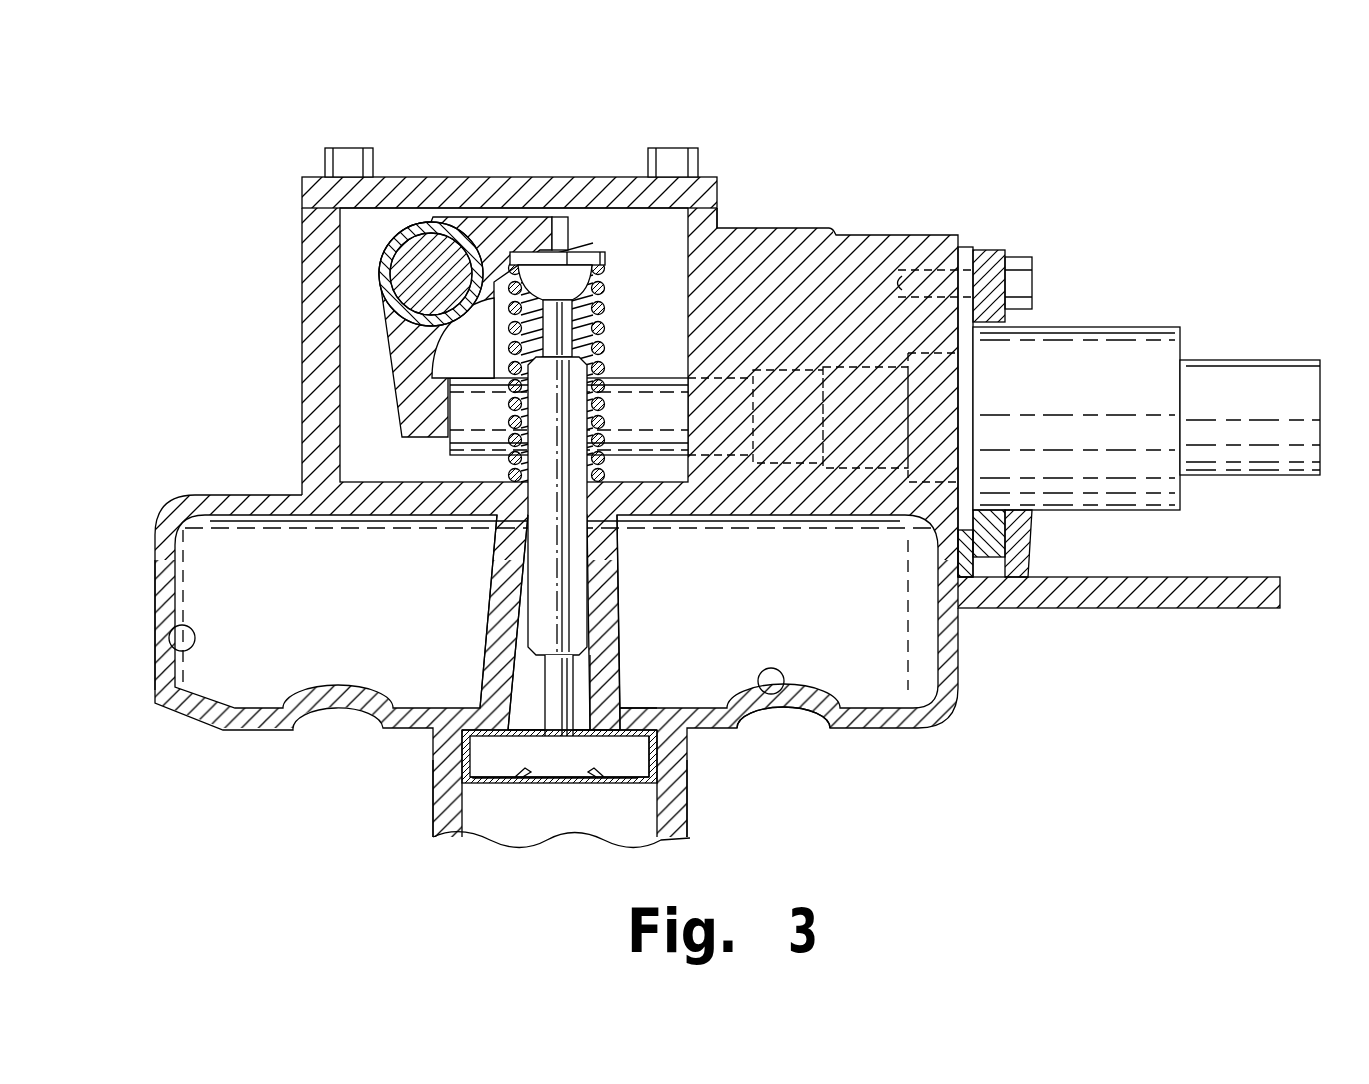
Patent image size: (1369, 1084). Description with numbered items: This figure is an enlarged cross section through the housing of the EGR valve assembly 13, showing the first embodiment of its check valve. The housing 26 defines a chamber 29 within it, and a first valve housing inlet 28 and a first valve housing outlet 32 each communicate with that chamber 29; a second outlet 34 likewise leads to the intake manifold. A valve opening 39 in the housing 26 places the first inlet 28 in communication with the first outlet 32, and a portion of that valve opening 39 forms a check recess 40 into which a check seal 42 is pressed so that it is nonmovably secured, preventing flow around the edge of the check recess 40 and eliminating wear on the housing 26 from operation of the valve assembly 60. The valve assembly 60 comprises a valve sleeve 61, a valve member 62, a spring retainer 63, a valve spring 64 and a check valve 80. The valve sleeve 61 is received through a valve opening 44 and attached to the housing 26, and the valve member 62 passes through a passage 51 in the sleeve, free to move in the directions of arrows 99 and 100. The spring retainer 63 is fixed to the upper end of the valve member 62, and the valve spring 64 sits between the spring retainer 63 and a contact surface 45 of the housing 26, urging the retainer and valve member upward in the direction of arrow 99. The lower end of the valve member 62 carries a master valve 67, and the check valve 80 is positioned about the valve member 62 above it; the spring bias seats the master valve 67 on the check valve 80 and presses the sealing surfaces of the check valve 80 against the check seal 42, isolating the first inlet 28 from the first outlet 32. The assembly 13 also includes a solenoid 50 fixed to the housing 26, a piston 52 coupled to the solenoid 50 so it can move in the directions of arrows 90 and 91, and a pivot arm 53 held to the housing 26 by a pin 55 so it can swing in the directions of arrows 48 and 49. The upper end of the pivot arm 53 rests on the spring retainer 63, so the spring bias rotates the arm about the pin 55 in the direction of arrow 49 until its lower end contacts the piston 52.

The EGR valve assembly 13 is at (1138, 180).
The housing 26 is at (950, 643).
The first valve housing inlet 28 is at (460, 818).
The chamber 29 is at (617, 752).
The first valve housing outlet 32 is at (771, 694).
The second outlet 34 is at (168, 637).
The valve opening 39 is at (621, 707).
The check recess 40 is at (462, 752).
The check seal 42 is at (660, 757).
The valve opening 44 is at (540, 545).
The contact surface 45 is at (633, 468).
The arrow 48 is at (285, 137).
The arrow 49 is at (223, 185).
The solenoid 50 is at (1140, 345).
The passage 51 is at (545, 672).
The piston 52 is at (640, 397).
The pivot arm 53 is at (487, 242).
The pin 55 is at (423, 243).
The valve assembly 60 is at (365, 455).
The valve sleeve 61 is at (590, 625).
The valve member 62 is at (565, 702).
The spring retainer 63 is at (588, 254).
The valve spring 64 is at (606, 278).
The master valve 67 is at (567, 773).
The check valve 80 is at (492, 783).
The arrow 90 is at (1335, 266).
The arrow 91 is at (1316, 298).
The arrow 99 is at (1259, 680).
The arrow 100 is at (1293, 677).